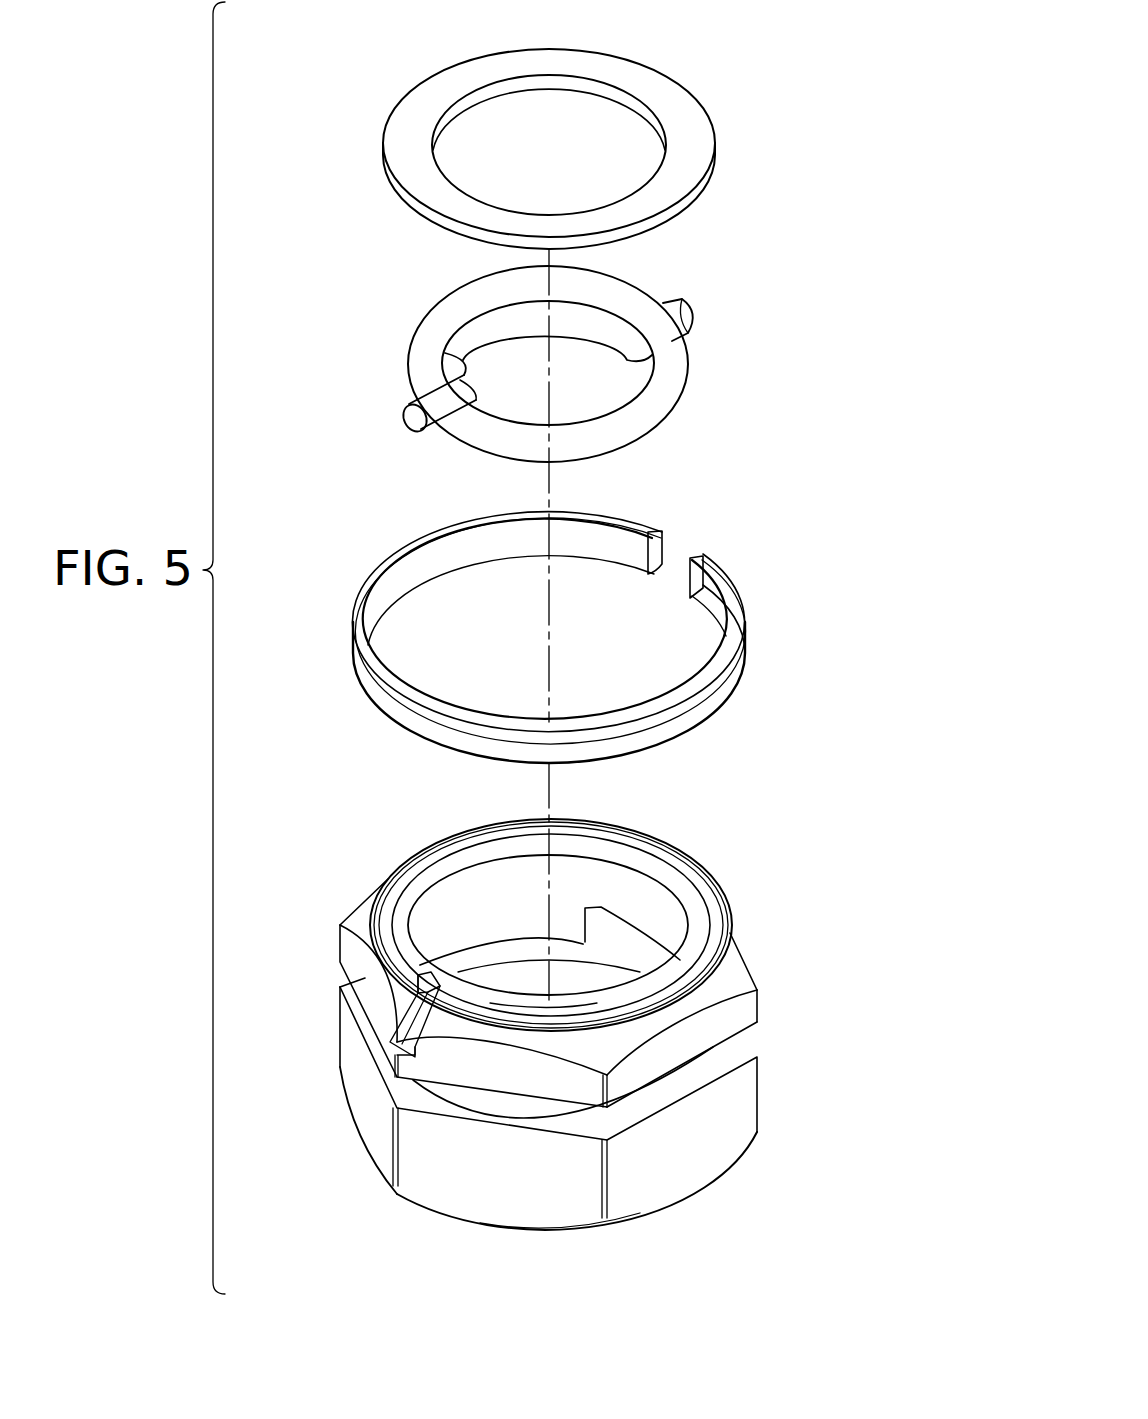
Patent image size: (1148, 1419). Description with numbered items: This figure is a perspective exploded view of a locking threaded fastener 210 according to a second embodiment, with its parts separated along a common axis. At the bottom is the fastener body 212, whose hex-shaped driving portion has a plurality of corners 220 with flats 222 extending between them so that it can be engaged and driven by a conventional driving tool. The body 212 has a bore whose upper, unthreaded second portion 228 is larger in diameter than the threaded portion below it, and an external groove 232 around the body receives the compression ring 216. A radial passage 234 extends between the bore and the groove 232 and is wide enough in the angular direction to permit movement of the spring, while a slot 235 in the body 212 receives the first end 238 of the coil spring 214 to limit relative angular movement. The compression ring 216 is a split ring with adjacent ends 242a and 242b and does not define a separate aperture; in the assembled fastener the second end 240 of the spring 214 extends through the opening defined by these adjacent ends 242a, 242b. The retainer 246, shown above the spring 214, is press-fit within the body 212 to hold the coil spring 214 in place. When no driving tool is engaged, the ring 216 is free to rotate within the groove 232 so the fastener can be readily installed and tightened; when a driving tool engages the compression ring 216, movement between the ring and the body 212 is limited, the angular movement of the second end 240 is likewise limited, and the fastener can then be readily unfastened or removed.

The locking threaded fastener 210 is at (841, 150).
The fastener body 212 is at (770, 935).
The coil spring 214 is at (706, 383).
The compression ring 216 is at (762, 678).
The corners 220 is at (386, 1163).
The flats 222 is at (505, 1185).
The second portion of bore 228 is at (430, 917).
The groove 232 is at (740, 1056).
The radial passage 234 is at (632, 937).
The slot 235 is at (417, 1007).
The first end of spring 238 is at (412, 394).
The second end of spring 240 is at (690, 301).
The first adjacent end of compression ring 242a is at (693, 560).
The second adjacent end of compression ring 242b is at (661, 539).
The retainer 246 is at (694, 79).